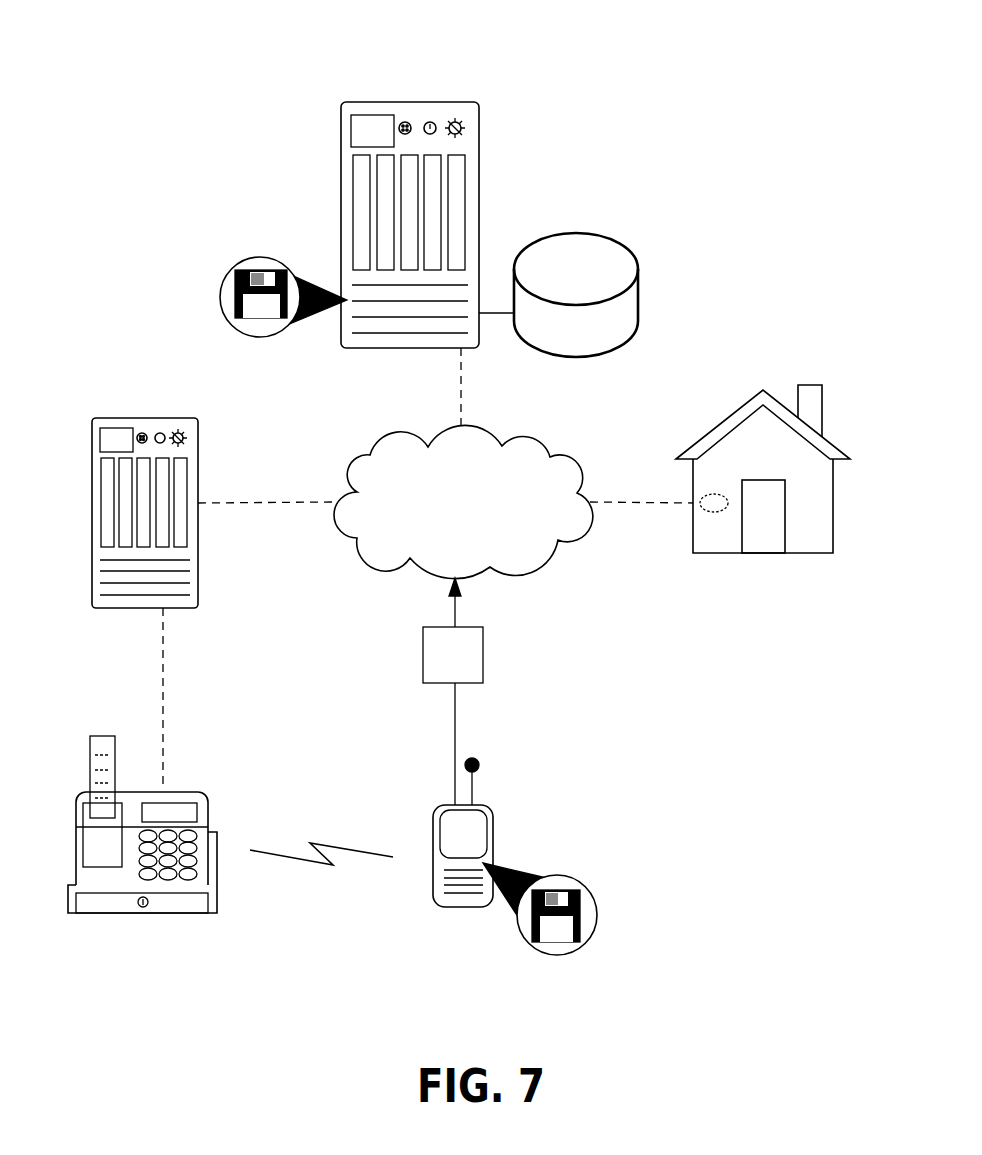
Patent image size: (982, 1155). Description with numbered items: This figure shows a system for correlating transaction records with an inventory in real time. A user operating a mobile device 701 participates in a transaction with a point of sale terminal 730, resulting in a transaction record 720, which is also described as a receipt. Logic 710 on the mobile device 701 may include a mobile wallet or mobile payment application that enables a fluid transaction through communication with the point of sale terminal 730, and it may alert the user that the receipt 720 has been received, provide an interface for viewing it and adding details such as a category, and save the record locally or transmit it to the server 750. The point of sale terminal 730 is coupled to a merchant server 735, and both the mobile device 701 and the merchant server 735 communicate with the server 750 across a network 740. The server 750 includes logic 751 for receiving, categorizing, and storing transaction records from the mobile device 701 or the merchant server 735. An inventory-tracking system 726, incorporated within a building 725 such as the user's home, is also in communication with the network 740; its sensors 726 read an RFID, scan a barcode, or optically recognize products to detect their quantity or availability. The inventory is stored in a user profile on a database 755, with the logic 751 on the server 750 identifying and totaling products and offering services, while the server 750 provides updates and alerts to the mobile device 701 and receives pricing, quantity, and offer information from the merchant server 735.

The mobile device 701 is at (493, 820).
The logic 710 is at (532, 947).
The transaction record 720 is at (483, 663).
The building 725 is at (712, 429).
The inventory-tracking system 726 is at (715, 515).
The point of sale terminal 730 is at (197, 913).
The merchant server 735 is at (193, 608).
The network 740 is at (463, 501).
The server 750 is at (479, 103).
The logic 751 is at (241, 270).
The database 755 is at (617, 242).